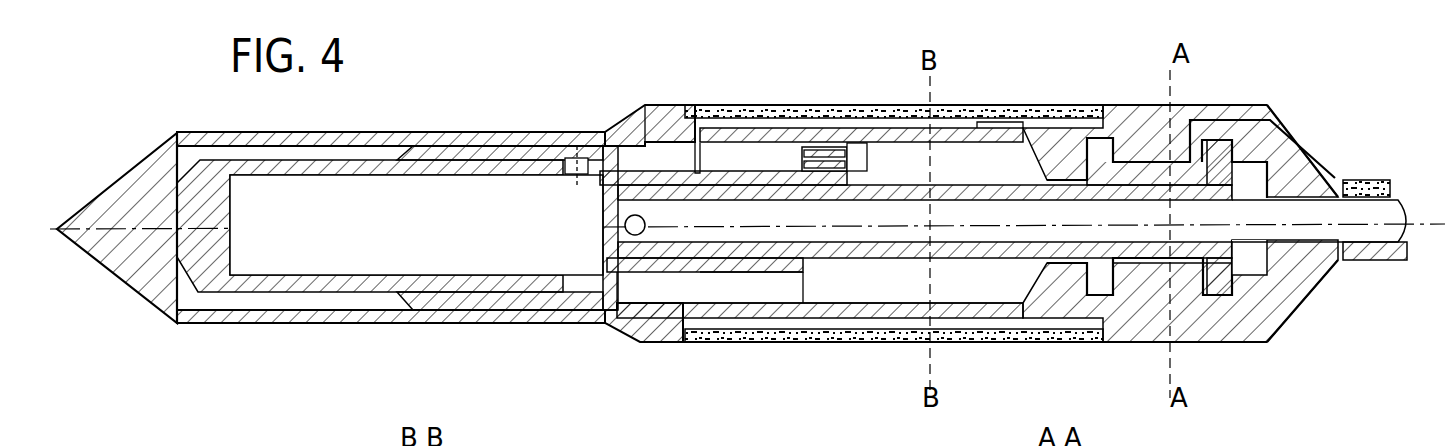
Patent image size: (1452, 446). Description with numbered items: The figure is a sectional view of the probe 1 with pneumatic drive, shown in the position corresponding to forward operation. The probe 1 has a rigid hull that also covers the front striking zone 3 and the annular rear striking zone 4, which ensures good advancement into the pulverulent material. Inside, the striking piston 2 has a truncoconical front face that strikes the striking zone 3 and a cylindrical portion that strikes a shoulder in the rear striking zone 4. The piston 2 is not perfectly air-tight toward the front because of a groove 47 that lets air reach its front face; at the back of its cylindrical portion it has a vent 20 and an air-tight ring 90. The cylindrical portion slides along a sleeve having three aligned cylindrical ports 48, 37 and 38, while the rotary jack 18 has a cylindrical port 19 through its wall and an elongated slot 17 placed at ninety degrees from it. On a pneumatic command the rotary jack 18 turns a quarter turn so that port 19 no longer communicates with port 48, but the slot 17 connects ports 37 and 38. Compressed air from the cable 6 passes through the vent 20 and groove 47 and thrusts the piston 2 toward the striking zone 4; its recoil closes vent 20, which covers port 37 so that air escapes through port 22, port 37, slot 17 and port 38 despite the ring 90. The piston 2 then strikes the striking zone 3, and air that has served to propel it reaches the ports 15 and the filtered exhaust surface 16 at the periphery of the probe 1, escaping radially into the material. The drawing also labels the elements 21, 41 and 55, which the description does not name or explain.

The probe 1 is at (282, 335).
The striking piston 2 is at (233, 208).
The striking zone 3 is at (193, 312).
The rear striking zone 4 is at (778, 115).
The cable 6 is at (1382, 262).
The ports 15 is at (958, 135).
The exhaust surface 16 is at (870, 336).
The elongated slot 17 is at (748, 198).
The rotary jack 18 is at (1222, 200).
The cylindrical port 19 is at (646, 223).
The vent 20 is at (575, 178).
The retaining ring 21 is at (1393, 187).
The port 22 is at (853, 150).
The cylindrical port 37 is at (698, 160).
The cylindrical port 38 is at (752, 168).
The cavity wall 41 is at (713, 275).
The groove 47 is at (422, 132).
The cylindrical port 48 is at (648, 140).
The flange 55 is at (600, 180).
The air-tight ring 90 is at (618, 292).